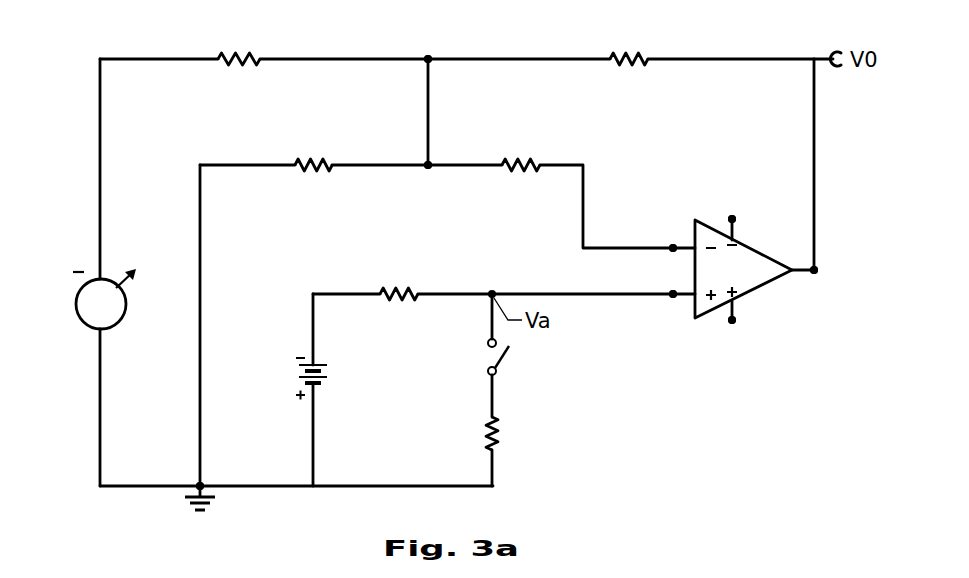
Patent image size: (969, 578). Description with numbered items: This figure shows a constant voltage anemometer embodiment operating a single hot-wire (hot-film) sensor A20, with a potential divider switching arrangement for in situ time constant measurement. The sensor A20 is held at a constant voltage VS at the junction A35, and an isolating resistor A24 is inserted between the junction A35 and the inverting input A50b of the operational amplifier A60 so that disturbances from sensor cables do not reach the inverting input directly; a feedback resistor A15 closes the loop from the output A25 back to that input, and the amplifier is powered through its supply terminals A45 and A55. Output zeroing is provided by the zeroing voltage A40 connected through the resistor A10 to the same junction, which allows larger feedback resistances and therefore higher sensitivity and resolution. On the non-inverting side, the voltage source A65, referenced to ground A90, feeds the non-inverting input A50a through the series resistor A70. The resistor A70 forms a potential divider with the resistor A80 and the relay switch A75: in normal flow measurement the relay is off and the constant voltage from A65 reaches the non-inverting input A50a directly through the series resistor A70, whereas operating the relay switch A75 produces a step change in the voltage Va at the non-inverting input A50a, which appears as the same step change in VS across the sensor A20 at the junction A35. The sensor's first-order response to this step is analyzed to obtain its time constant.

The resistor A10 is at (222, 57).
The feedback resistor RFA A15 is at (610, 57).
The sensor A20 is at (298, 168).
The resistor A24 is at (505, 168).
The output node V0 A25 is at (818, 272).
The junction A35 is at (432, 63).
The voltage A40 is at (87, 326).
The positive supply terminal of op-amp A45 is at (735, 216).
The non-inverting input A50a is at (668, 298).
The inverting input A50b is at (668, 252).
The negative supply terminal of op-amp A55 is at (735, 323).
The operational amplifier UA A60 is at (760, 288).
The voltage source A65 is at (328, 385).
The resistor A70 is at (378, 292).
The relay switch A75 is at (502, 368).
The resistor A80 is at (497, 448).
The ground node A90 is at (203, 484).